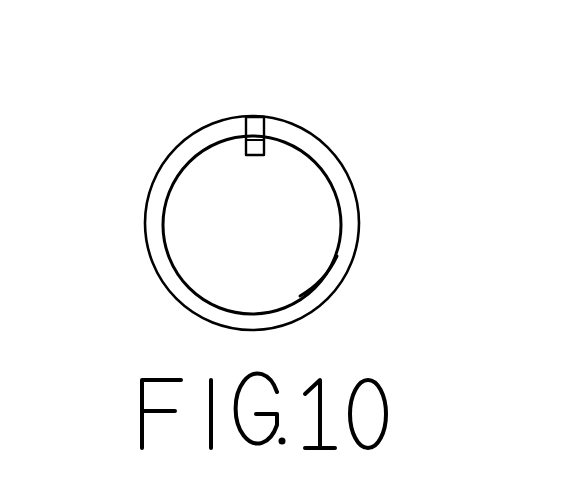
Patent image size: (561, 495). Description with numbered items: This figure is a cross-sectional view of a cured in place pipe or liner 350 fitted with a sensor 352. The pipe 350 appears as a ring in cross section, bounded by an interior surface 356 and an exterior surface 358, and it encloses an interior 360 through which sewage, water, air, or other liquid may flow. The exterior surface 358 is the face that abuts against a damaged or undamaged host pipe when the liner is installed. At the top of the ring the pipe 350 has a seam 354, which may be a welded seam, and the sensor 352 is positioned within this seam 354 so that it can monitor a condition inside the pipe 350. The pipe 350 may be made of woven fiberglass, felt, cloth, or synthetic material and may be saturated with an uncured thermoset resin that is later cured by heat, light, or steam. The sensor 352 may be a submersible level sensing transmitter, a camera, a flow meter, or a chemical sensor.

The cured in place pipe 350 is at (255, 223).
The sensor 352 is at (255, 130).
The seam 354 is at (255, 140).
The interior surface 356 is at (202, 297).
The exterior surface 358 is at (147, 242).
The interior 360 is at (305, 255).